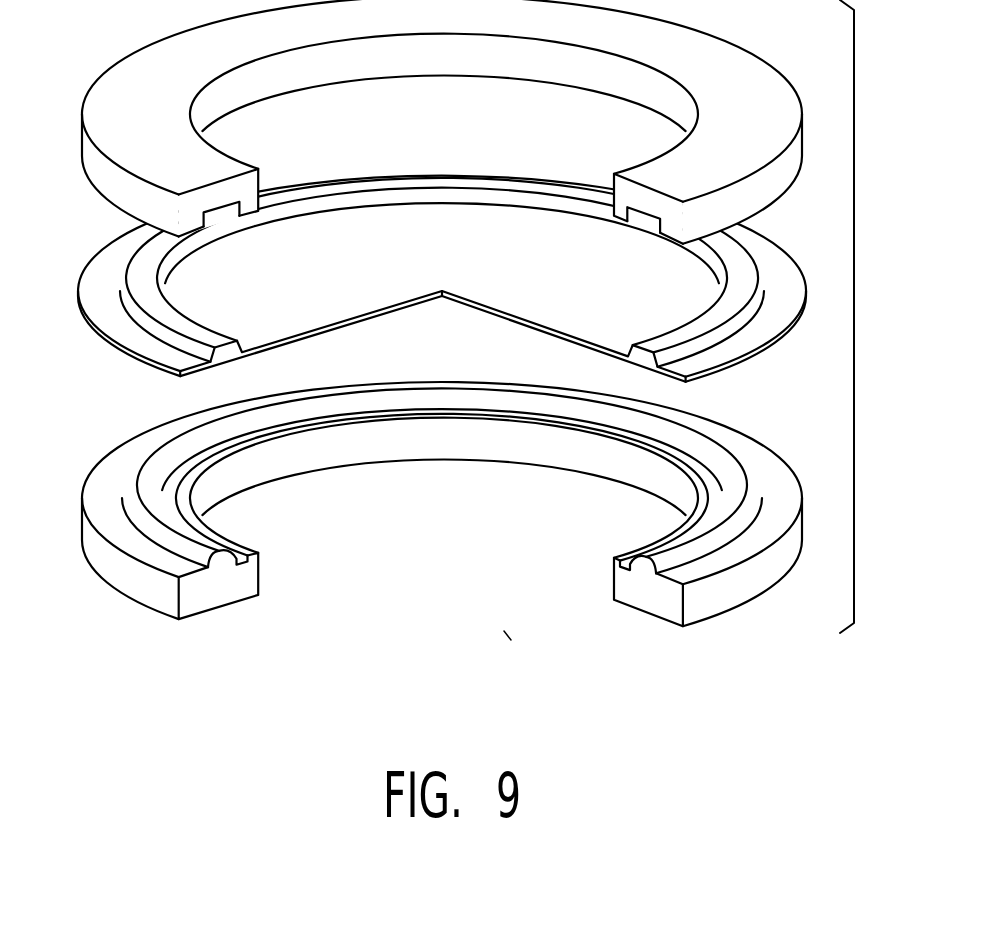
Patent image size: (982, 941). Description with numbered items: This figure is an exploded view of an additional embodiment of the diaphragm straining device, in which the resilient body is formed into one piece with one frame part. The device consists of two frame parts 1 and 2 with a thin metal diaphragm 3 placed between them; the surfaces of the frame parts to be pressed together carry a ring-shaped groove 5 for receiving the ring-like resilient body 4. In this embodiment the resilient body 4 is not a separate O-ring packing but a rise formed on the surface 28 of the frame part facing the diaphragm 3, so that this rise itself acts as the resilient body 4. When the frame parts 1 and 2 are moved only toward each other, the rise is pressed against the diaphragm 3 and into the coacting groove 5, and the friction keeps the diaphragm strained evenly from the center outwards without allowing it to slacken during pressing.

The frame part 1 is at (433, 127).
The frame part 2 is at (453, 532).
The diaphragm 3 is at (160, 354).
The resilient body 4 is at (227, 558).
The ring-shaped groove 5 is at (200, 212).
The surface 28 is at (760, 450).